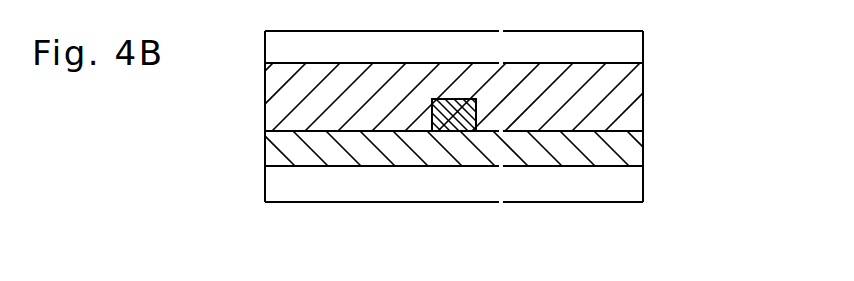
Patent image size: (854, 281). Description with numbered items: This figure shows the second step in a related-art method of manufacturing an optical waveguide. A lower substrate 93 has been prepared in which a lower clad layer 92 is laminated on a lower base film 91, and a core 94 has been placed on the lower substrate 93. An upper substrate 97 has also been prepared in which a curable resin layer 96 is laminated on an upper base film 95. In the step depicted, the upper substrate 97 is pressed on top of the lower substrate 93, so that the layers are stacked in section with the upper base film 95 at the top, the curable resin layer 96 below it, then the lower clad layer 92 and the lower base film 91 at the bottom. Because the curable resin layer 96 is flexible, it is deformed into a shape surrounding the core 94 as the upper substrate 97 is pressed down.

The lower base film 91 is at (643, 181).
The lower clad layer 92 is at (643, 153).
The lower substrate 93 is at (748, 175).
The core 94 is at (447, 129).
The upper base film 95 is at (643, 47).
The curable resin layer 96 is at (643, 108).
The upper substrate 97 is at (748, 82).